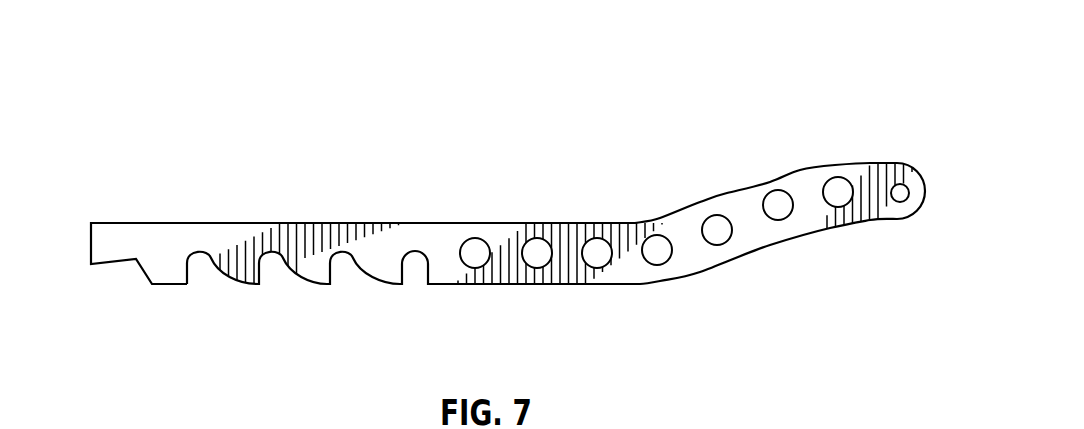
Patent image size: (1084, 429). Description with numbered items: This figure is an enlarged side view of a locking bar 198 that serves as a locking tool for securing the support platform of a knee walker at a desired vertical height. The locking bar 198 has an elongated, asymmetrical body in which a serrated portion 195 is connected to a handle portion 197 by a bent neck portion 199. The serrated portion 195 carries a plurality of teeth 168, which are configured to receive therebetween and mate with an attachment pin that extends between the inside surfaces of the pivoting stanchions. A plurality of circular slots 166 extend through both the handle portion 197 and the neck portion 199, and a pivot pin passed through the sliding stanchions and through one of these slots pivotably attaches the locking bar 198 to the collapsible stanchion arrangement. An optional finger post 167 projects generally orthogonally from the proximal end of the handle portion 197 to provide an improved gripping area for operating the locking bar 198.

The locking bar 198 is at (372, 90).
The serrated portion 195 is at (293, 222).
The bent neck portion 199 is at (697, 197).
The handle portion 197 is at (865, 162).
The teeth 168 is at (231, 278).
The circular slots 166 is at (600, 268).
The finger post 167 is at (902, 202).